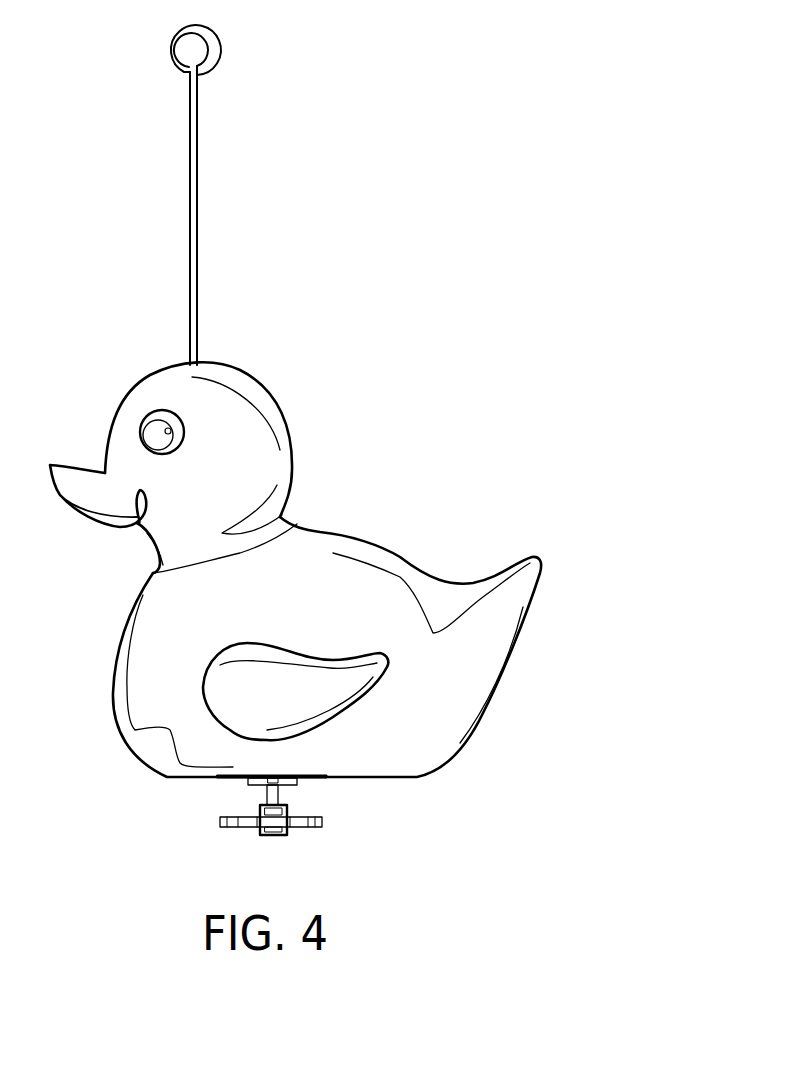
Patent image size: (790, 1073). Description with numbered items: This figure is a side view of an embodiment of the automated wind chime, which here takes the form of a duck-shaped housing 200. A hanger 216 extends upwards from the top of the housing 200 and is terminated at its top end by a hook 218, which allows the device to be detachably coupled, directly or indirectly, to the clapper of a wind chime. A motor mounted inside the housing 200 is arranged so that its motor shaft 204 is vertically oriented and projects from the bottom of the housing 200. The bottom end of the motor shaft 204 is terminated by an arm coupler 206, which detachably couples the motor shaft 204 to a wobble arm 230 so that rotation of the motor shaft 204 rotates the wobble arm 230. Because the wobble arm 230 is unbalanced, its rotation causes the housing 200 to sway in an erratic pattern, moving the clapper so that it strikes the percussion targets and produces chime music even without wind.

The housing 200 is at (153, 618).
The motor shaft 204 is at (273, 797).
The arm coupler 206 is at (260, 813).
The hanger 216 is at (381, 29).
The hook 218 is at (210, 36).
The wobble arm 230 is at (303, 828).